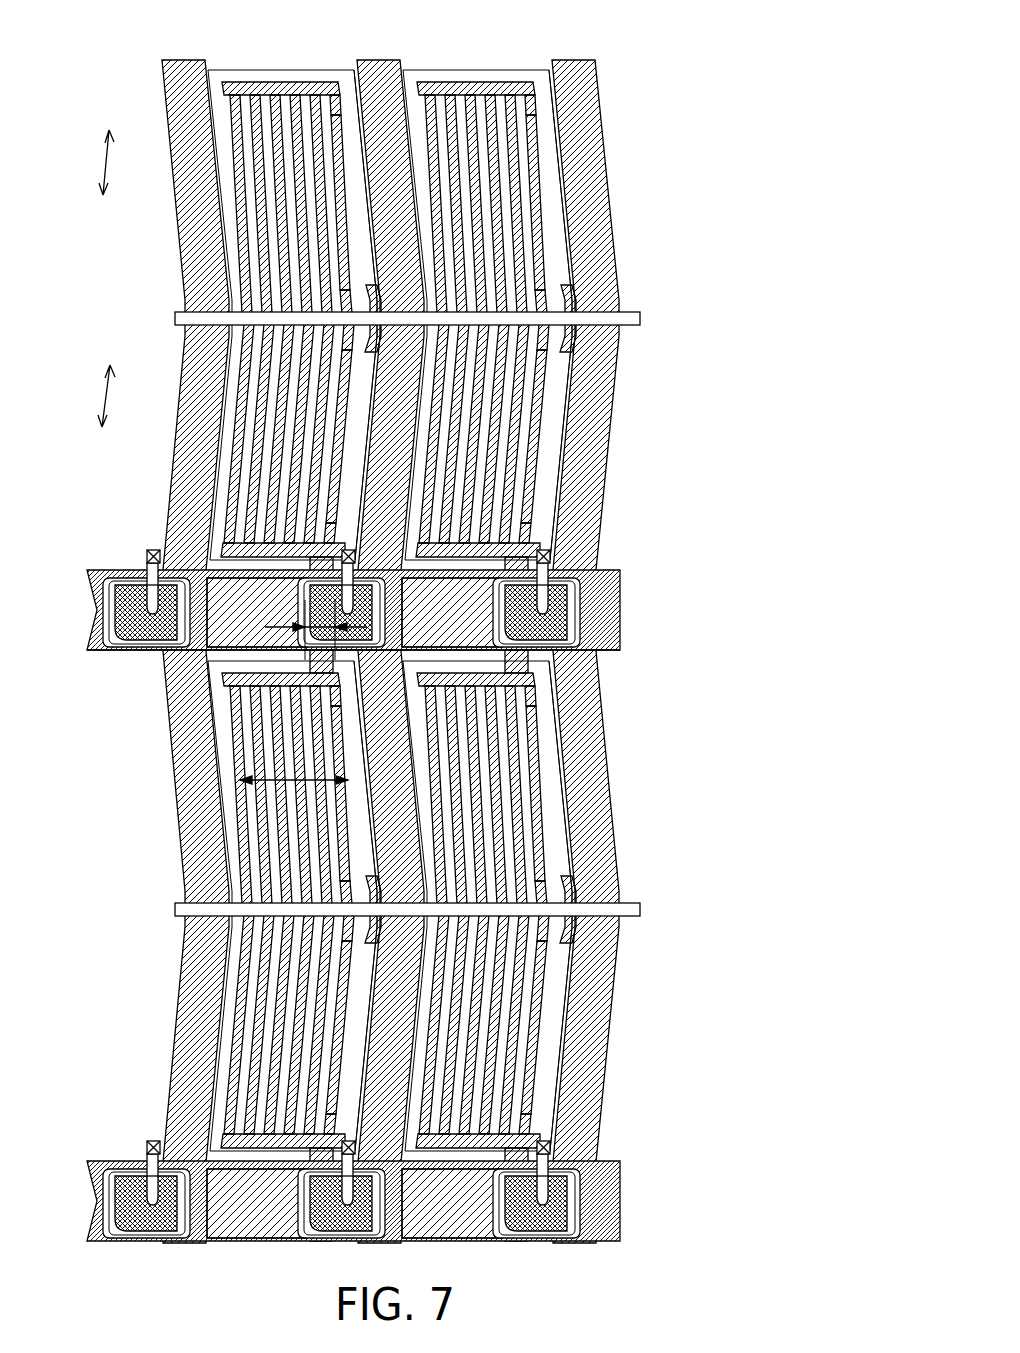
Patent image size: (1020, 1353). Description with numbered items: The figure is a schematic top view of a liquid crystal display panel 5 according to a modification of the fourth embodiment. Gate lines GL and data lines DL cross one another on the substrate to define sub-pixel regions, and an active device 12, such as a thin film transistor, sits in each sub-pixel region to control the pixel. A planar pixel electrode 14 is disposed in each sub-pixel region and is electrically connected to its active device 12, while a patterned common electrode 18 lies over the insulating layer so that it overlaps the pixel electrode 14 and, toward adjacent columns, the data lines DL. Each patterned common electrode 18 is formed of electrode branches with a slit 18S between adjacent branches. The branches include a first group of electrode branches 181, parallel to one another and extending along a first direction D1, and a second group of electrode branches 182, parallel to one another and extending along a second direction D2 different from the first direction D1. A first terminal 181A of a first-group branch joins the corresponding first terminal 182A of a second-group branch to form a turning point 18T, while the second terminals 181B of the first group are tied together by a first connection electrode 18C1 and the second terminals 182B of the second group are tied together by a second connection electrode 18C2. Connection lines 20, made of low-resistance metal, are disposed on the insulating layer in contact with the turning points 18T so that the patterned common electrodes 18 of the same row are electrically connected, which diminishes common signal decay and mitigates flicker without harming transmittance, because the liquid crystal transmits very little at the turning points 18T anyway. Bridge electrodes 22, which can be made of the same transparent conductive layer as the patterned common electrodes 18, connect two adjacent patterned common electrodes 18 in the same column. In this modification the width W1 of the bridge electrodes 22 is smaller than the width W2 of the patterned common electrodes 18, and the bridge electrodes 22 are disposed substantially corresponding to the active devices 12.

The liquid crystal display panel 5 is at (733, 58).
The active device 12 is at (598, 650).
The pixel electrode 14 is at (575, 424).
The patterned common electrode 18 is at (360, 636).
The slit 18S is at (520, 94).
The turning point 18T is at (556, 328).
The first connection electrode 18C1 is at (223, 547).
The second connection electrode 18C2 is at (228, 90).
The first group of electrode branches 181 is at (569, 437).
The first terminal of first group of electrode branches 181A is at (572, 348).
The second terminal of first group of electrode branches 181B is at (547, 550).
The second group of electrode branches 182 is at (572, 200).
The first terminal of second group of electrode branches 182A is at (563, 300).
The second terminal of second group of electrode branches 182B is at (537, 92).
The connection line 20 is at (642, 317).
The bridge electrode 22 is at (260, 648).
The data line DL is at (585, 75).
The gate line GL is at (620, 603).
The width of the bridge electrodes W1 is at (293, 628).
The width of the patterned common electrodes W2 is at (290, 781).
The first direction D1 is at (121, 396).
The second direction D2 is at (122, 162).